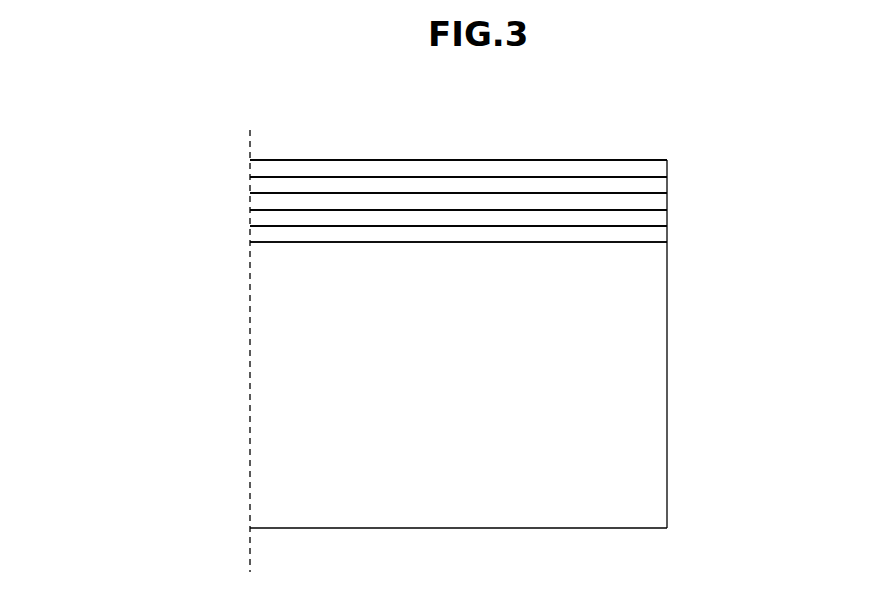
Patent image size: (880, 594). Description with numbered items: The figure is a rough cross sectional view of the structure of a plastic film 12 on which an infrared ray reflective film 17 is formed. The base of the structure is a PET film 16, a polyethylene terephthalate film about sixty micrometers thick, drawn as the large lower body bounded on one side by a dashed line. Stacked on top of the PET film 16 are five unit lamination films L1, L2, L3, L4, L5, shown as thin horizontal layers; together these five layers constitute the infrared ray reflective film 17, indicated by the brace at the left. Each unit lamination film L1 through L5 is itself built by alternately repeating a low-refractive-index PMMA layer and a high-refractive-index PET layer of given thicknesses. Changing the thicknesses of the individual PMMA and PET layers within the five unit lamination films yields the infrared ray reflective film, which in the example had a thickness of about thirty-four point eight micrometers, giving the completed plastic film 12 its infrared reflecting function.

The plastic film on which the infrared ray reflective film is formed 12 is at (365, 134).
The PET film 16 is at (540, 528).
The infrared ray reflective film 17 is at (232, 161).
The unit lamination film L1 is at (670, 235).
The unit lamination film L2 is at (670, 217).
The unit lamination film L3 is at (672, 200).
The unit lamination film L4 is at (670, 185).
The unit lamination film L5 is at (670, 167).